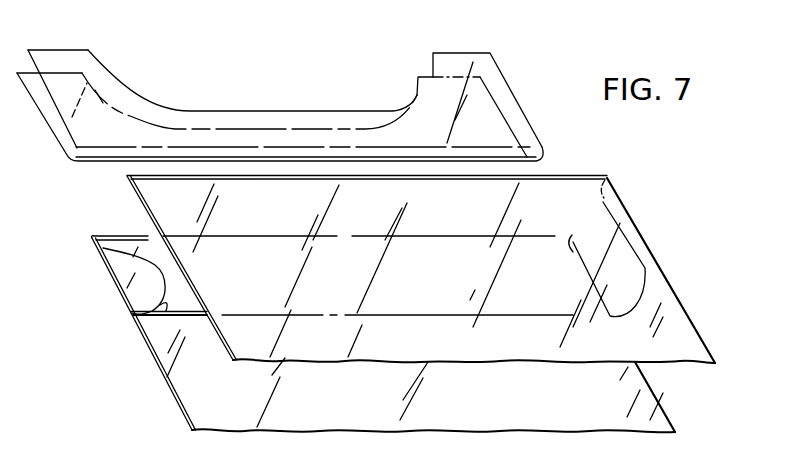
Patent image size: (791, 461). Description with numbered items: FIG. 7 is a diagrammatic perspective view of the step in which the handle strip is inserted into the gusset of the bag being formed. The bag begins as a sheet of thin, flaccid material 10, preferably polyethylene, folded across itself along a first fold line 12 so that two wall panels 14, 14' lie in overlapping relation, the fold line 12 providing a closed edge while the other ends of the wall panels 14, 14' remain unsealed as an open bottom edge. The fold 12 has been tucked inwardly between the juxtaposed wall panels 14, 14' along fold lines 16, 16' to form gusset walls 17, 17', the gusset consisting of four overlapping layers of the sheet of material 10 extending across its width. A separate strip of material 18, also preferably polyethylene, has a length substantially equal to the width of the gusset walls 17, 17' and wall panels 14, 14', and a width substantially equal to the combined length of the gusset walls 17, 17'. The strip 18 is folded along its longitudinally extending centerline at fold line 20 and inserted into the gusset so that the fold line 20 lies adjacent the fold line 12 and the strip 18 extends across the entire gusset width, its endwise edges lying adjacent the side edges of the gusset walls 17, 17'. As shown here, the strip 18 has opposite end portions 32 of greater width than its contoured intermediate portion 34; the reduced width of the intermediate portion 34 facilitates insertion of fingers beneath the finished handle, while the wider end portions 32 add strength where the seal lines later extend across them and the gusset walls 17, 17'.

The sheet of thin, flaccid material 10 is at (731, 288).
The first fold line 12 is at (172, 316).
The wall panel 14 is at (392, 322).
The wall panel 14' is at (693, 381).
The fold line 16 is at (132, 267).
The fold line 16' is at (90, 226).
The gusset wall 17 is at (105, 280).
The gusset wall 17' is at (114, 296).
The strip of material 18 is at (548, 50).
The fold line 20 is at (530, 157).
The end portion 32 is at (62, 63).
The contoured intermediate portion 34 is at (293, 110).